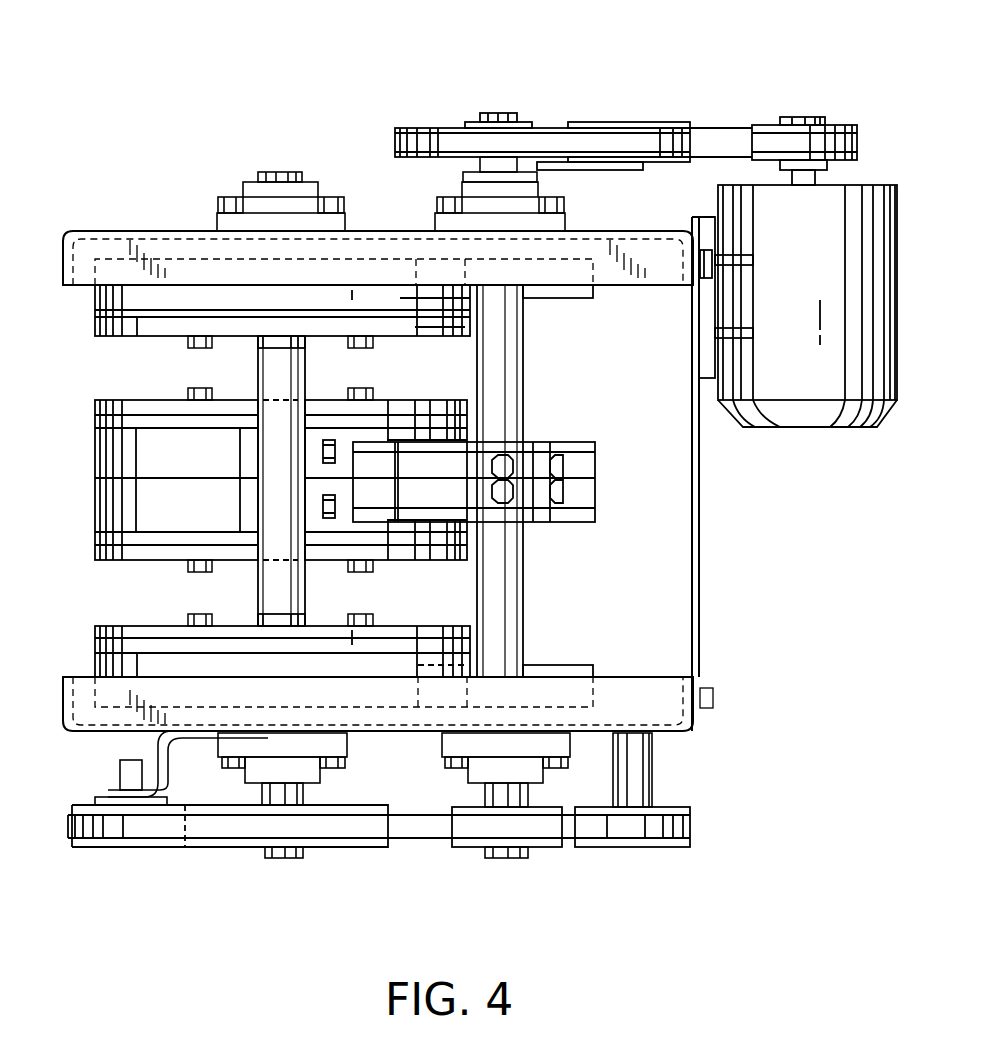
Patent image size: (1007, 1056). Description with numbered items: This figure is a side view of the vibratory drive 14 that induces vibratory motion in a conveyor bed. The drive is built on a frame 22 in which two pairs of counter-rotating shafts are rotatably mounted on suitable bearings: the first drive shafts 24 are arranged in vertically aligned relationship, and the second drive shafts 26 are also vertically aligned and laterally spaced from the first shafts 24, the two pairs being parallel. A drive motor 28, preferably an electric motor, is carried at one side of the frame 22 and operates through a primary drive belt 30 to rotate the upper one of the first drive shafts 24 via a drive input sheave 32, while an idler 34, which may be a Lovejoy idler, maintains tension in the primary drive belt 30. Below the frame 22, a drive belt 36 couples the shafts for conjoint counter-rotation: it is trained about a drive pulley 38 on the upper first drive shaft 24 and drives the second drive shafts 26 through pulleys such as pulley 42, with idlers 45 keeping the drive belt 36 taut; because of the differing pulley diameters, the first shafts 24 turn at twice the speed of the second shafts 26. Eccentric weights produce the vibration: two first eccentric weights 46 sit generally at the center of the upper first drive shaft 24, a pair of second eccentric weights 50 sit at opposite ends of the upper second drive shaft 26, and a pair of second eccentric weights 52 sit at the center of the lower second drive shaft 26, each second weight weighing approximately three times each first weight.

The vibratory drive 14 is at (716, 63).
The frame 22 is at (159, 222).
The first pair of counter-rotating drive shafts 24 is at (533, 366).
The second pair of counter-rotating drive shafts 26 is at (257, 583).
The drive motor 28 is at (813, 247).
The primary drive belt 30 is at (704, 132).
The drive input sheave 32 is at (431, 128).
The idler 34 is at (627, 122).
The drive belt 36 is at (418, 830).
The drive pulley 38 is at (547, 845).
The pulley 42 is at (247, 845).
The idlers 45 is at (120, 843).
The first eccentric weights 46 is at (587, 493).
The second eccentric weights 50 is at (107, 317).
The second eccentric weights 52 is at (108, 497).